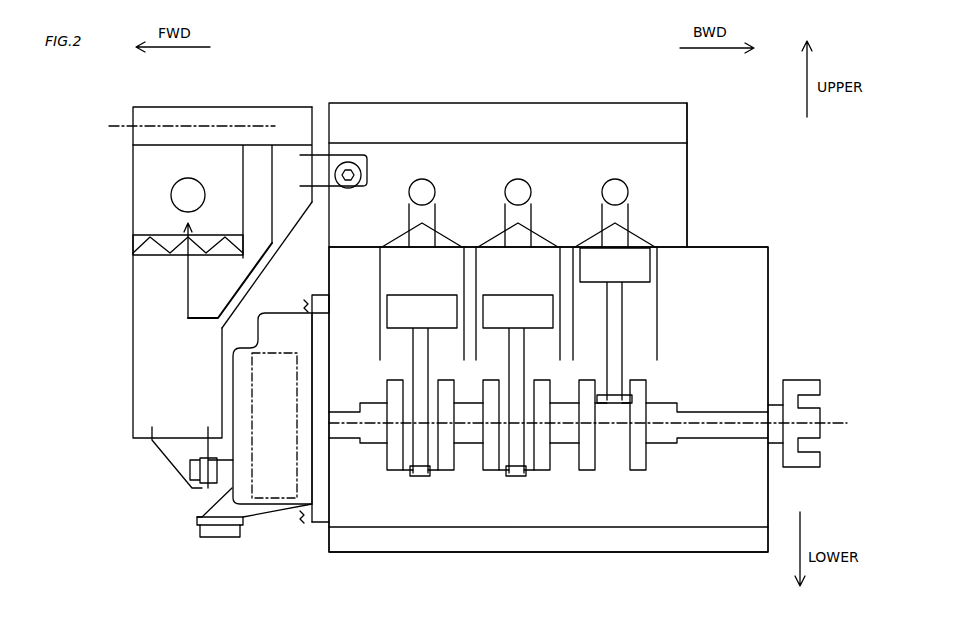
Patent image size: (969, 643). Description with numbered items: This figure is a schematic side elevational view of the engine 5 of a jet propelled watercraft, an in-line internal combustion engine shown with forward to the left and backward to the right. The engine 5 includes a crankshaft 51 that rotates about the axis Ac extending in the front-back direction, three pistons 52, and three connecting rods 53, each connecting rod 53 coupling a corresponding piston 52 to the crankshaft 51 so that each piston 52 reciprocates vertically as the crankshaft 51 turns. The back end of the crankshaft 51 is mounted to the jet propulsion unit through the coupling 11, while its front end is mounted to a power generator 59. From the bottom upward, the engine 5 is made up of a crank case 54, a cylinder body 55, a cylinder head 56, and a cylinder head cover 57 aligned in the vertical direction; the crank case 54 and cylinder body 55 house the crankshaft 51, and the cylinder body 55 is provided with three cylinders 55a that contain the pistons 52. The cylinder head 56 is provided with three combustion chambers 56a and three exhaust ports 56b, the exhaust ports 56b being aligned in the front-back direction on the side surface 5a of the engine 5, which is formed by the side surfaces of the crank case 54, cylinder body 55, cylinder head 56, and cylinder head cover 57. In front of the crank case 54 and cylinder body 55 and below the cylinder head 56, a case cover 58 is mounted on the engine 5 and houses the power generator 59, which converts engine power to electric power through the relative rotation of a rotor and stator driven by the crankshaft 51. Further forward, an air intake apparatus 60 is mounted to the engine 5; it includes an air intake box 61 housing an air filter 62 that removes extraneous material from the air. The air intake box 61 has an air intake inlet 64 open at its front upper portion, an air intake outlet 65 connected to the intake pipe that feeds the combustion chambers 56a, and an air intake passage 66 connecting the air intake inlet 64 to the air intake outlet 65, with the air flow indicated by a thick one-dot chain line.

The engine 5 is at (720, 109).
The side surface 5a is at (695, 188).
The coupling 11 is at (811, 371).
The crankshaft 51 is at (346, 440).
The piston 52 is at (421, 295).
The connecting rod 53 is at (421, 478).
The crank case 54 is at (757, 487).
The cylinder body 55 is at (769, 279).
The cylinder 55a is at (382, 337).
The cylinder head 56 is at (688, 221).
The combustion chamber 56a is at (390, 247).
The exhaust port 56b is at (422, 179).
The cylinder head cover 57 is at (687, 129).
The case cover 58 is at (288, 313).
The power generator 59 is at (272, 508).
The air intake apparatus 60 is at (245, 95).
The air intake box 61 is at (290, 107).
The air filter 62 is at (160, 257).
The air intake inlet 64 is at (133, 131).
The air intake outlet 65 is at (203, 185).
The air intake passage 66 is at (292, 209).
The axis of the crankshaft Ac is at (838, 423).